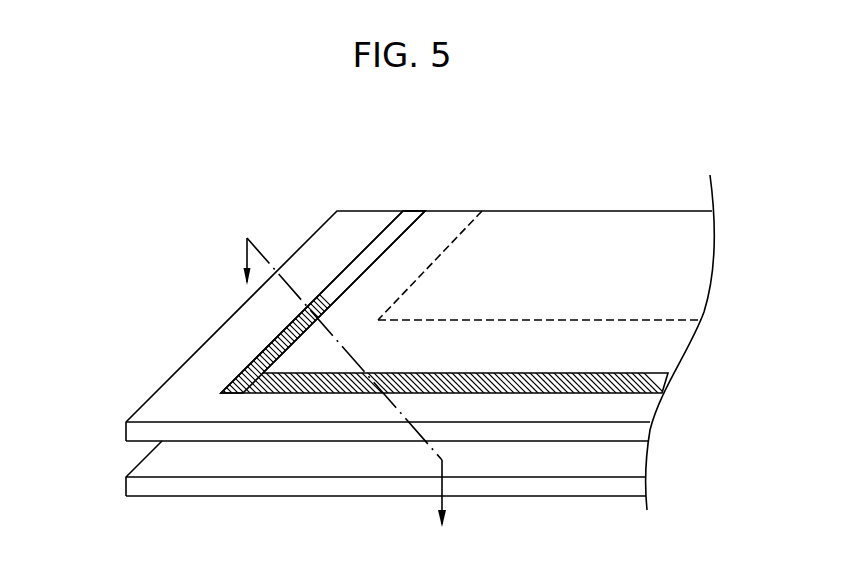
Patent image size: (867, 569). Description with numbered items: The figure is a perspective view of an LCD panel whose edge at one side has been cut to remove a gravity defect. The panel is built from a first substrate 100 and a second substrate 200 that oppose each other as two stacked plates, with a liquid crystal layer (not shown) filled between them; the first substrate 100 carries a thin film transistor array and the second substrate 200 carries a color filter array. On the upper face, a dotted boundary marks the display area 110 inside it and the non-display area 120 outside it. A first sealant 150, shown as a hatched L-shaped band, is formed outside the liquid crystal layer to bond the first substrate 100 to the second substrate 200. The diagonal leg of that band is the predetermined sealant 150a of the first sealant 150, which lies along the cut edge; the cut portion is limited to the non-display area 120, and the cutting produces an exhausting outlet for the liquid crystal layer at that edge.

The first substrate 100 is at (151, 470).
The second substrate 200 is at (151, 411).
The display area 110 is at (458, 235).
The non-display area 120 is at (643, 327).
The first sealant 150 is at (643, 373).
The predetermined sealant 150a is at (268, 348).